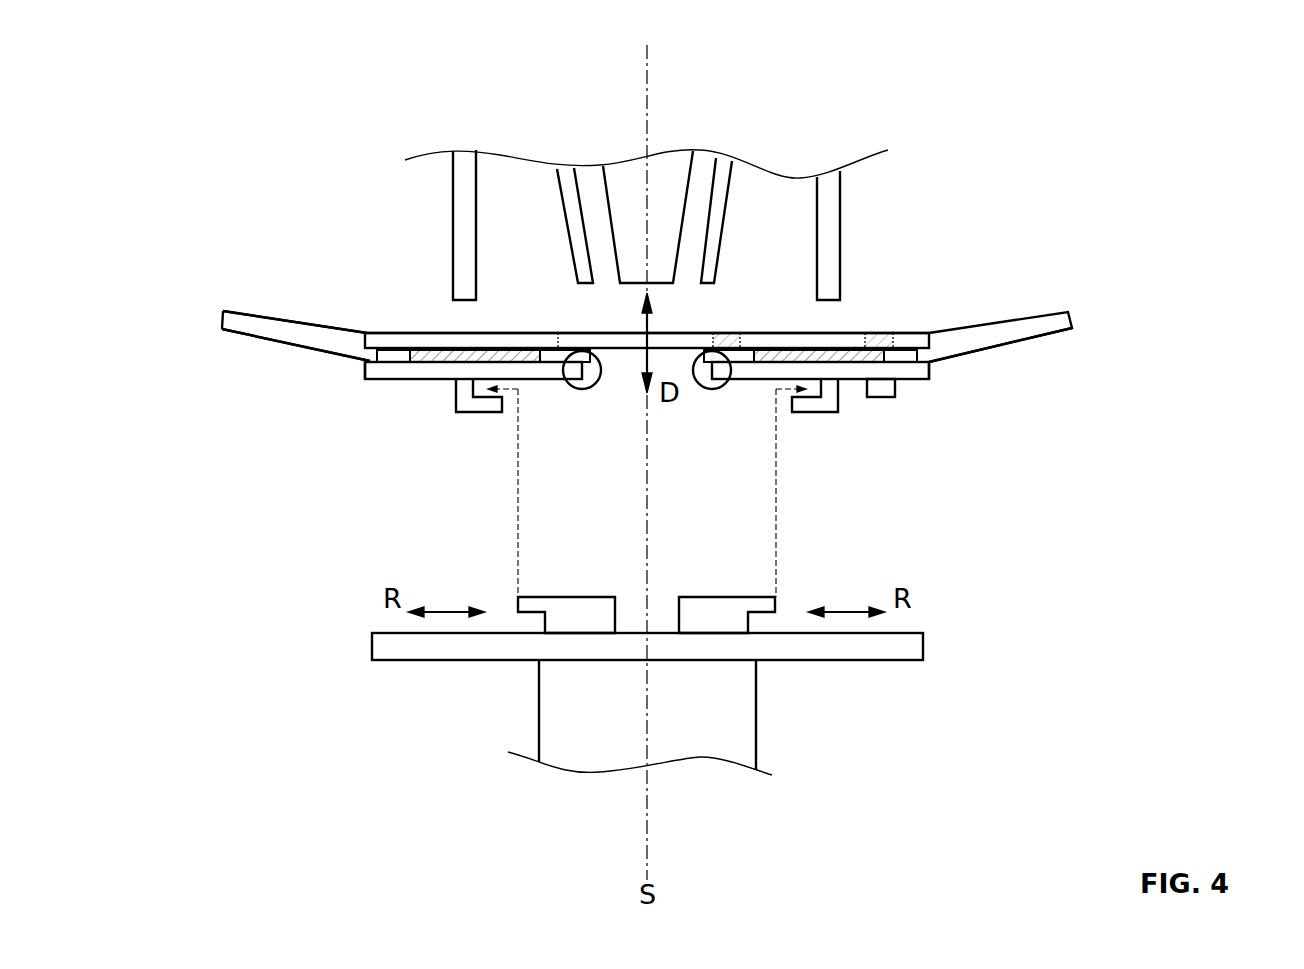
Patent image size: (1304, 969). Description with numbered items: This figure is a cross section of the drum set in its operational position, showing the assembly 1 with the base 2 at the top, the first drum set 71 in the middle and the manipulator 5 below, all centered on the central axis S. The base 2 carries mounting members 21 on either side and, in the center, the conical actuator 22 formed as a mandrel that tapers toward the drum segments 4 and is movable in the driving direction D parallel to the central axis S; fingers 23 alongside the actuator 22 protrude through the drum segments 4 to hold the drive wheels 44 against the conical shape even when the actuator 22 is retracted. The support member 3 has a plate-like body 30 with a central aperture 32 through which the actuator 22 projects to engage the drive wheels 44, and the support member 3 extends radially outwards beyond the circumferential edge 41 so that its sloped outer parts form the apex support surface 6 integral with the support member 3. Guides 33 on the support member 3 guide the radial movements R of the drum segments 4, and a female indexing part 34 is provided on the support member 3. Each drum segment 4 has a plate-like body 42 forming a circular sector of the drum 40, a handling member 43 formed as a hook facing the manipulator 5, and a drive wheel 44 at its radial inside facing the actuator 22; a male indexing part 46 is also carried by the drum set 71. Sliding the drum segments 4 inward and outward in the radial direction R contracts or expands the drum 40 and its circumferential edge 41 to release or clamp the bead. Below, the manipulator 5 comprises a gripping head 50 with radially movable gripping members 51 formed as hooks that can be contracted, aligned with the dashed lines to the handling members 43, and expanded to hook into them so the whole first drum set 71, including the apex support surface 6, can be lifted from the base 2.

The assembly 1 is at (196, 203).
The base 2 is at (408, 97).
The mounting member 21 is at (452, 207).
The actuator 22 is at (683, 173).
The fingers 23 is at (575, 182).
The support member 3 is at (297, 325).
The apex support surface 6 is at (253, 336).
The plate-like body 30 is at (497, 333).
The central aperture 32 is at (690, 333).
The guides 33 is at (437, 353).
The female indexing part 34 is at (885, 353).
The drum segment 4 is at (666, 425).
The drum 40 is at (382, 373).
The circumferential edge 41 is at (364, 371).
The plate-like body 42 is at (430, 373).
The handling member 43 is at (480, 405).
The drive wheel 44 is at (583, 390).
The male indexing part 46 is at (890, 390).
The first drum set 71 is at (254, 425).
The manipulator 5 is at (383, 739).
The gripping head 50 is at (555, 711).
The gripping members 51 is at (563, 597).